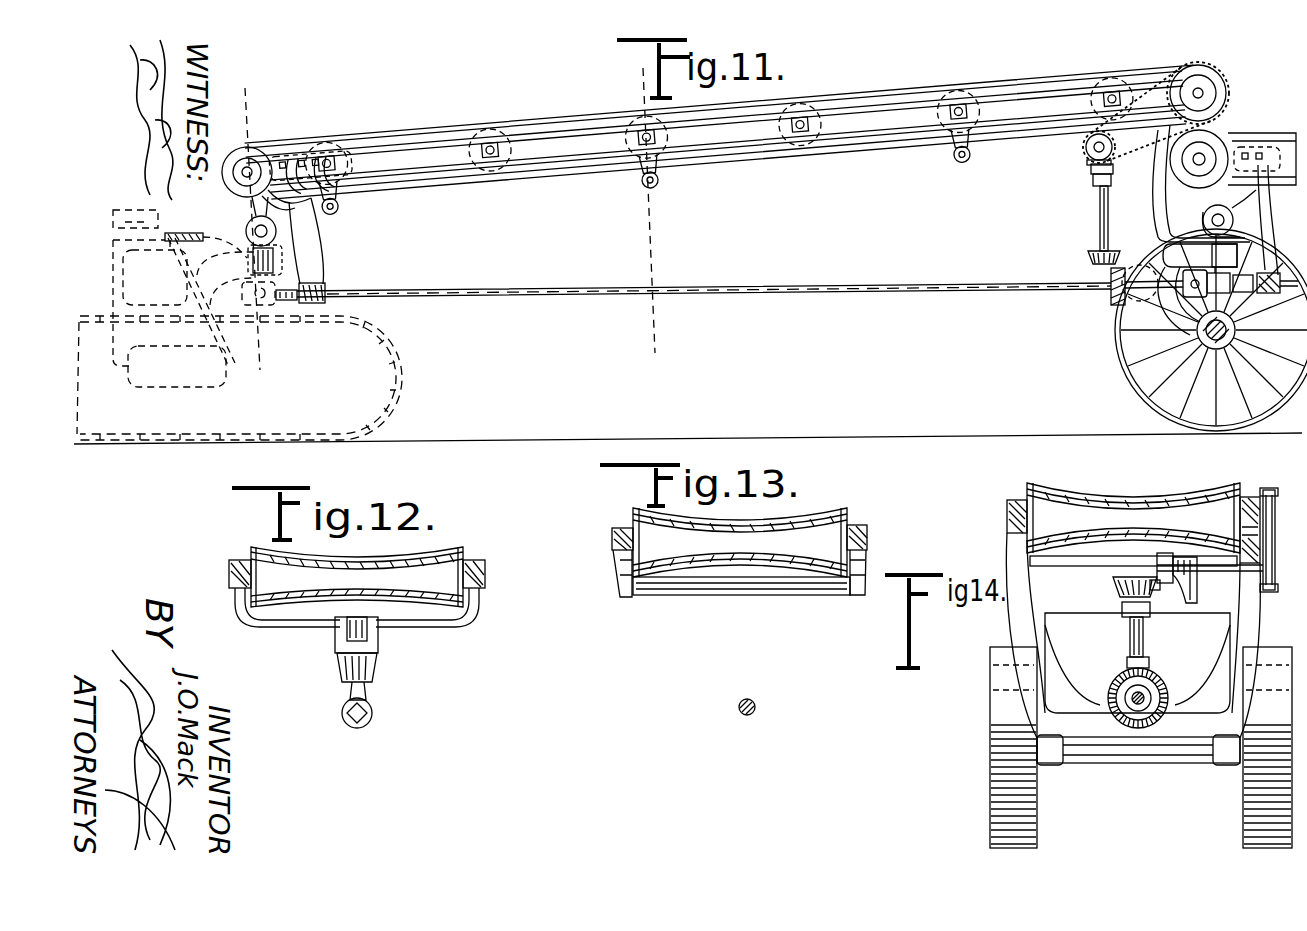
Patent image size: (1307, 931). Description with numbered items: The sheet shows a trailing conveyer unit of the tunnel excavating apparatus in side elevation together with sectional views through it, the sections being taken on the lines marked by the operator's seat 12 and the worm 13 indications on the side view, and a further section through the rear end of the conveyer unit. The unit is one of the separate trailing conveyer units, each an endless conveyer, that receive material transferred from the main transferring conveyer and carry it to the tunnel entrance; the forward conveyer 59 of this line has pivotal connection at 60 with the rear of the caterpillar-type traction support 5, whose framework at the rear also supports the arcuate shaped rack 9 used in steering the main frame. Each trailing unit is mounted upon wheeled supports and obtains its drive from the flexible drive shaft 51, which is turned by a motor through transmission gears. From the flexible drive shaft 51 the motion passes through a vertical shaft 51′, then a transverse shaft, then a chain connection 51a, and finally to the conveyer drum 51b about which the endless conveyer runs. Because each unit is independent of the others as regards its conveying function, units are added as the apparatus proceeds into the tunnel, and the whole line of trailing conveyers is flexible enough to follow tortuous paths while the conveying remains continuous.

In FIG. 11, the traction support 5 is at (387, 436).
In FIG. 11, the arcuate shaped rack 9 is at (192, 233).
In FIG. 11, the operator's seat 12 is at (255, 369).
In FIG. 11, the worm 13 is at (648, 335).
In FIG. 11, the flexible drive shaft 51 is at (379, 291).
In FIG. 12, the flexible drive shaft 51 is at (373, 702).
In FIG. 13, the flexible drive shaft 51 is at (755, 701).
In FIG. 14, the flexible drive shaft 51 is at (1125, 692).
In FIG. 11, the vertical shaft 51′ is at (1100, 215).
In FIG. 14, the vertical shaft 51′ is at (1143, 640).
In FIG. 11, the chain connection 51a is at (1147, 80).
In FIG. 14, the chain connection 51a is at (1277, 505).
In FIG. 11, the conveyer drum 51b is at (1212, 79).
In FIG. 14, the conveyer drum 51b is at (1193, 503).
In FIG. 11, the forward conveyer 59 is at (582, 102).
In FIG. 12, the forward conveyer 59 is at (427, 547).
In FIG. 13, the forward conveyer 59 is at (739, 541).
In FIG. 14, the forward conveyer 59 is at (1172, 477).
In FIG. 11, the pivotal connection 60 is at (264, 244).
In FIG. 12, the pivotal connection 60 is at (377, 661).